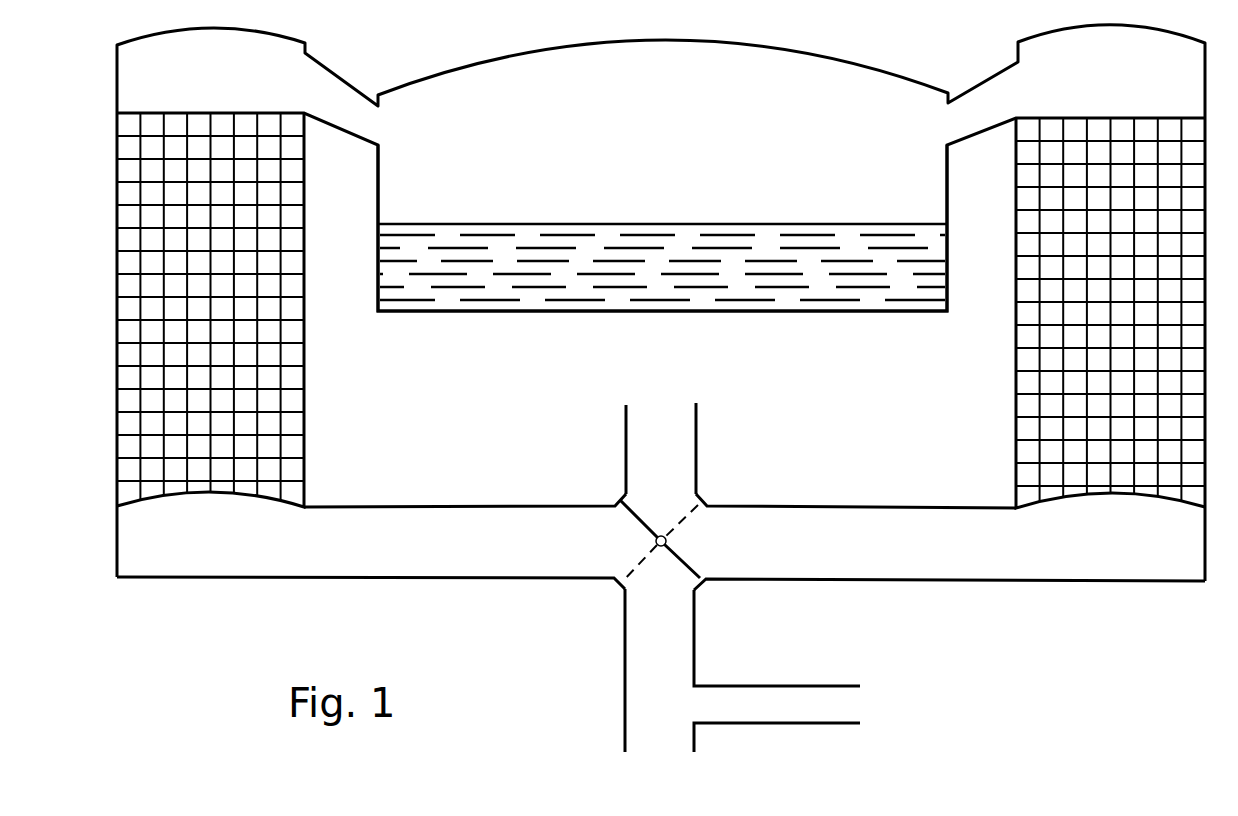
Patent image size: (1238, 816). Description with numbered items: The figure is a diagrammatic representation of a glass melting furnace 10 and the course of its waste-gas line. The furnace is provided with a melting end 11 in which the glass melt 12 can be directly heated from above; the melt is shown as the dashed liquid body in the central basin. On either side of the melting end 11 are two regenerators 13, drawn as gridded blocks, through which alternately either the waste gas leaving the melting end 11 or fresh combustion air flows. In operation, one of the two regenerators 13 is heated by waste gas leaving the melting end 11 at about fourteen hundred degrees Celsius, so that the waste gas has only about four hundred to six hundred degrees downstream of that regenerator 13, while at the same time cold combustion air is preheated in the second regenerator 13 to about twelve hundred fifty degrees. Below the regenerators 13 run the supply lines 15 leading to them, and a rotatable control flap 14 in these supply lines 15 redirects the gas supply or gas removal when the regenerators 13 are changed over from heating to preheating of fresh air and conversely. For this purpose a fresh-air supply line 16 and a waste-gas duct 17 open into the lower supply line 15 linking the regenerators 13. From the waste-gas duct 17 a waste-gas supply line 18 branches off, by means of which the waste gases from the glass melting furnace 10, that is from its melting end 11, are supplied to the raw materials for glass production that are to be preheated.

The glass melting furnace 10 is at (325, 604).
The melting end 11 is at (797, 321).
The glass melt 12 is at (457, 278).
The regenerators 13 is at (270, 423).
The rotatable control flap 14 is at (641, 516).
The supply lines 15 is at (552, 563).
The fresh-air supply line 16 is at (638, 437).
The waste-gas duct 17 is at (633, 638).
The waste-gas supply line 18 is at (758, 697).